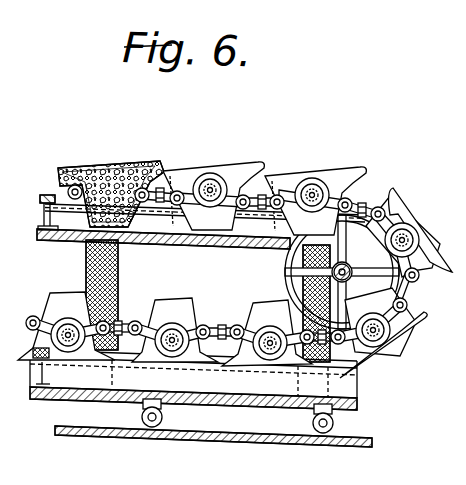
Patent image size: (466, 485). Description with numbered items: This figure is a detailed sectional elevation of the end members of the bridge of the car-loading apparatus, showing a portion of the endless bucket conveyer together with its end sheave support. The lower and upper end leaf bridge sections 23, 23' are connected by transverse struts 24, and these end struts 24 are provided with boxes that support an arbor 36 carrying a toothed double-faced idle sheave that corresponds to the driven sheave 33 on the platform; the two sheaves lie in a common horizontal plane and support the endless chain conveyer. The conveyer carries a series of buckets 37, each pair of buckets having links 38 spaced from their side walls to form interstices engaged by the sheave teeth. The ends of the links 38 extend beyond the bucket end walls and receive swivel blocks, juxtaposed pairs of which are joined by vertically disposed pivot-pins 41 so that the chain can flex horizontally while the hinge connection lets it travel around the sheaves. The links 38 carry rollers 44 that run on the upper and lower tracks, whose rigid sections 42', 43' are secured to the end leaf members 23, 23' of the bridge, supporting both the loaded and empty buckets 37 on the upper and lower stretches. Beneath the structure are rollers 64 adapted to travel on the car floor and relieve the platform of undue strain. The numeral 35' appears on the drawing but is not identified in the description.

The end leaf bridge section 23 is at (193, 389).
The end leaf bridge section 23' is at (205, 242).
The transverse strut 24 is at (119, 262).
The driven sheave 33 is at (175, 330).
The shaft 35' is at (296, 260).
The arbor 36 is at (338, 262).
The bucket 37 is at (156, 165).
The link 38 is at (66, 187).
The pivot-pin 41 is at (165, 172).
The rigid track section 42' is at (45, 232).
The rigid track section 43' is at (180, 380).
The roller 44 is at (210, 208).
The roller 64 is at (164, 417).